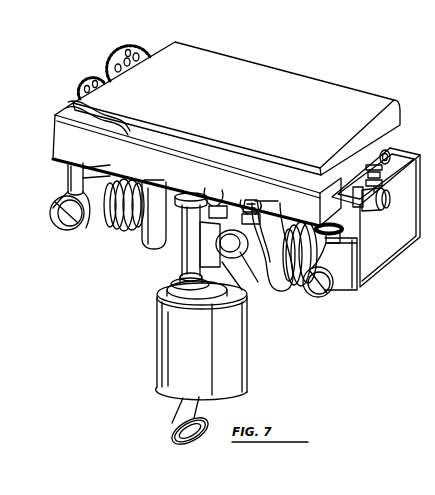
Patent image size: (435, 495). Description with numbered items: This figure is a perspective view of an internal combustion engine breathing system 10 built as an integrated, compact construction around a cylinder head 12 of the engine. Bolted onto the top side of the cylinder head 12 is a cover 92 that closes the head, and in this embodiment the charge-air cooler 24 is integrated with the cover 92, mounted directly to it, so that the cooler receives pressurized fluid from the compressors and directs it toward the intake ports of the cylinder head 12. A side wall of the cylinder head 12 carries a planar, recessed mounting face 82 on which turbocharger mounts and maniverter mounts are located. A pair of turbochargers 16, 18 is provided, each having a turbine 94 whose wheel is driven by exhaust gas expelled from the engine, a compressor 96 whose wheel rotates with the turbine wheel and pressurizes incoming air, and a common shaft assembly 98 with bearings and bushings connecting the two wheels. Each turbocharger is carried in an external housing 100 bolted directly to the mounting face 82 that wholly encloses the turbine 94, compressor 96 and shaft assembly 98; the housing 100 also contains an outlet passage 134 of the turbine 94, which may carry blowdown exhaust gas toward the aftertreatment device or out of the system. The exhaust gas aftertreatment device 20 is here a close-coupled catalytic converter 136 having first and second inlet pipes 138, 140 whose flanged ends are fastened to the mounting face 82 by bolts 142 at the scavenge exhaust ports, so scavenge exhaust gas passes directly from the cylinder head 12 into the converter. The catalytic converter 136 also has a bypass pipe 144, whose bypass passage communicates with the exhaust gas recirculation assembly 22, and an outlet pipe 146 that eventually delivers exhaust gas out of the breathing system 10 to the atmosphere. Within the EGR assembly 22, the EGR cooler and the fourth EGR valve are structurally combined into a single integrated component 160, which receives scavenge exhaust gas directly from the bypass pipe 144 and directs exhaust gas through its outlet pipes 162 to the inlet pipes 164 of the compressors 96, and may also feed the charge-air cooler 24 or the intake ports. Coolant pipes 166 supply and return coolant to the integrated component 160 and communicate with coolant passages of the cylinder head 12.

The internal combustion engine breathing system 10 is at (362, 50).
The cylinder head 12 is at (402, 261).
The turbocharger 16 is at (140, 243).
The turbocharger 18 is at (276, 306).
The exhaust gas aftertreatment device 20 is at (249, 351).
The exhaust gas recirculation assembly 22 is at (52, 136).
The charge-air cooler 24 is at (263, 62).
The mounting face 82 is at (355, 291).
The cover 92 is at (303, 87).
The turbine 94 is at (150, 244).
The compressor 96 is at (124, 230).
The shaft assembly 98 is at (133, 231).
The housing 100 is at (150, 190).
The outlet passage 134 is at (181, 194).
The catalytic converter 136 is at (172, 343).
The first inlet pipe 138 is at (170, 266).
The second inlet pipe 140 is at (247, 358).
The bolts 142 is at (247, 213).
The bypass pipe 144 is at (173, 318).
The outlet pipe 146 is at (180, 404).
The integrated component 160 is at (70, 108).
The outlet pipes 162 is at (68, 173).
The inlet pipes 164 is at (90, 214).
The coolant pipes 166 is at (255, 205).